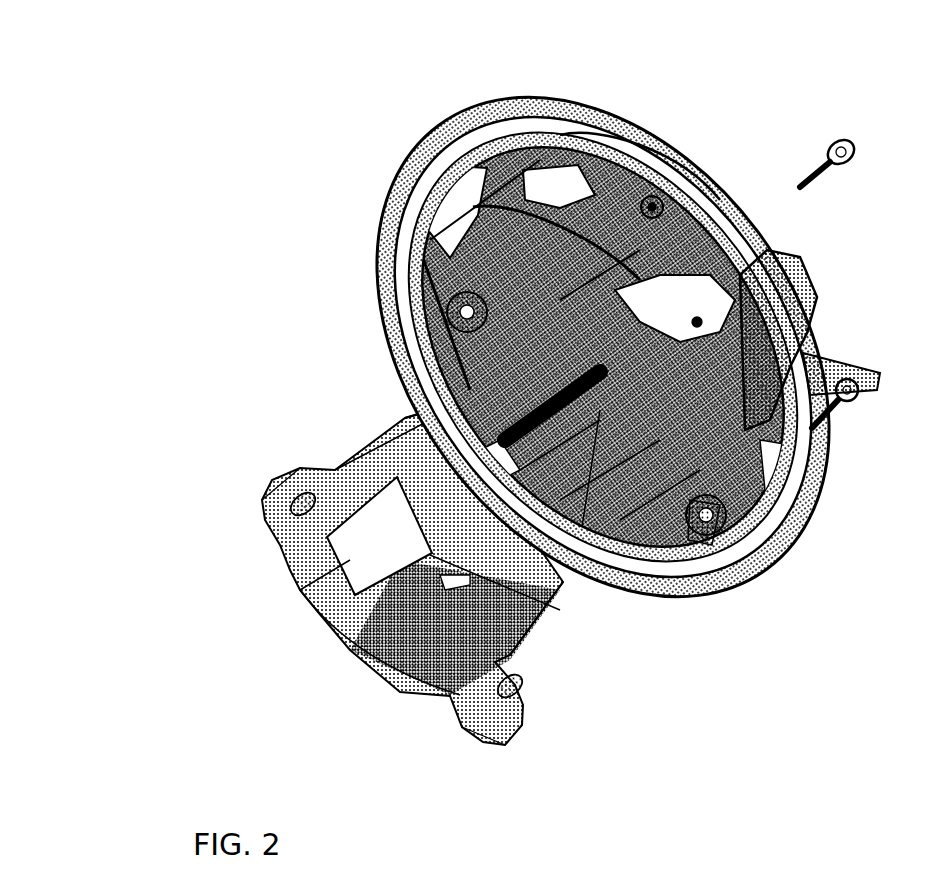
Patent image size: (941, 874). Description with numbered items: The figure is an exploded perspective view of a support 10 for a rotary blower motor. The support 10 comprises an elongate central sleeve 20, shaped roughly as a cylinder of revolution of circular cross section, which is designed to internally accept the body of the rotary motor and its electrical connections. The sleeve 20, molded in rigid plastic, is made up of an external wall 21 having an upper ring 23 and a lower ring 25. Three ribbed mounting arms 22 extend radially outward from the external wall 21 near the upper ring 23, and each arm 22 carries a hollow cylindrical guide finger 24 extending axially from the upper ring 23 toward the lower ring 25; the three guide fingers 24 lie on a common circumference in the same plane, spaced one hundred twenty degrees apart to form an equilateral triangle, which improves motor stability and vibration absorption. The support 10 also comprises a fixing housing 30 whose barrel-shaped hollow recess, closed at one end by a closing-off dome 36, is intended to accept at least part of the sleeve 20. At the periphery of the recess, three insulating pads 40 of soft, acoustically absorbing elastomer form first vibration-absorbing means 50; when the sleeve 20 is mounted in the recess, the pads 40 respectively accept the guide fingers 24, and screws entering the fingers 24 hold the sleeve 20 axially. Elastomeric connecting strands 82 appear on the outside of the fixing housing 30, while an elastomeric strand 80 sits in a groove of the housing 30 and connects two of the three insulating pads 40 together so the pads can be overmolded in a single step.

The support 10 is at (160, 305).
The elongate central sleeve 20 is at (397, 606).
The external wall 21 is at (382, 447).
The mounting arms 22 is at (265, 522).
The upper ring 23 is at (322, 620).
The guide fingers 24 is at (304, 494).
The lower ring 25 is at (560, 594).
The fixing housing 30 is at (398, 150).
The closing-off dome 36 is at (818, 298).
The insulating pads 40 is at (442, 300).
The first vibration-absorbing means 50 is at (708, 512).
The connecting strand 80 is at (562, 132).
The connecting strands 82 is at (681, 197).